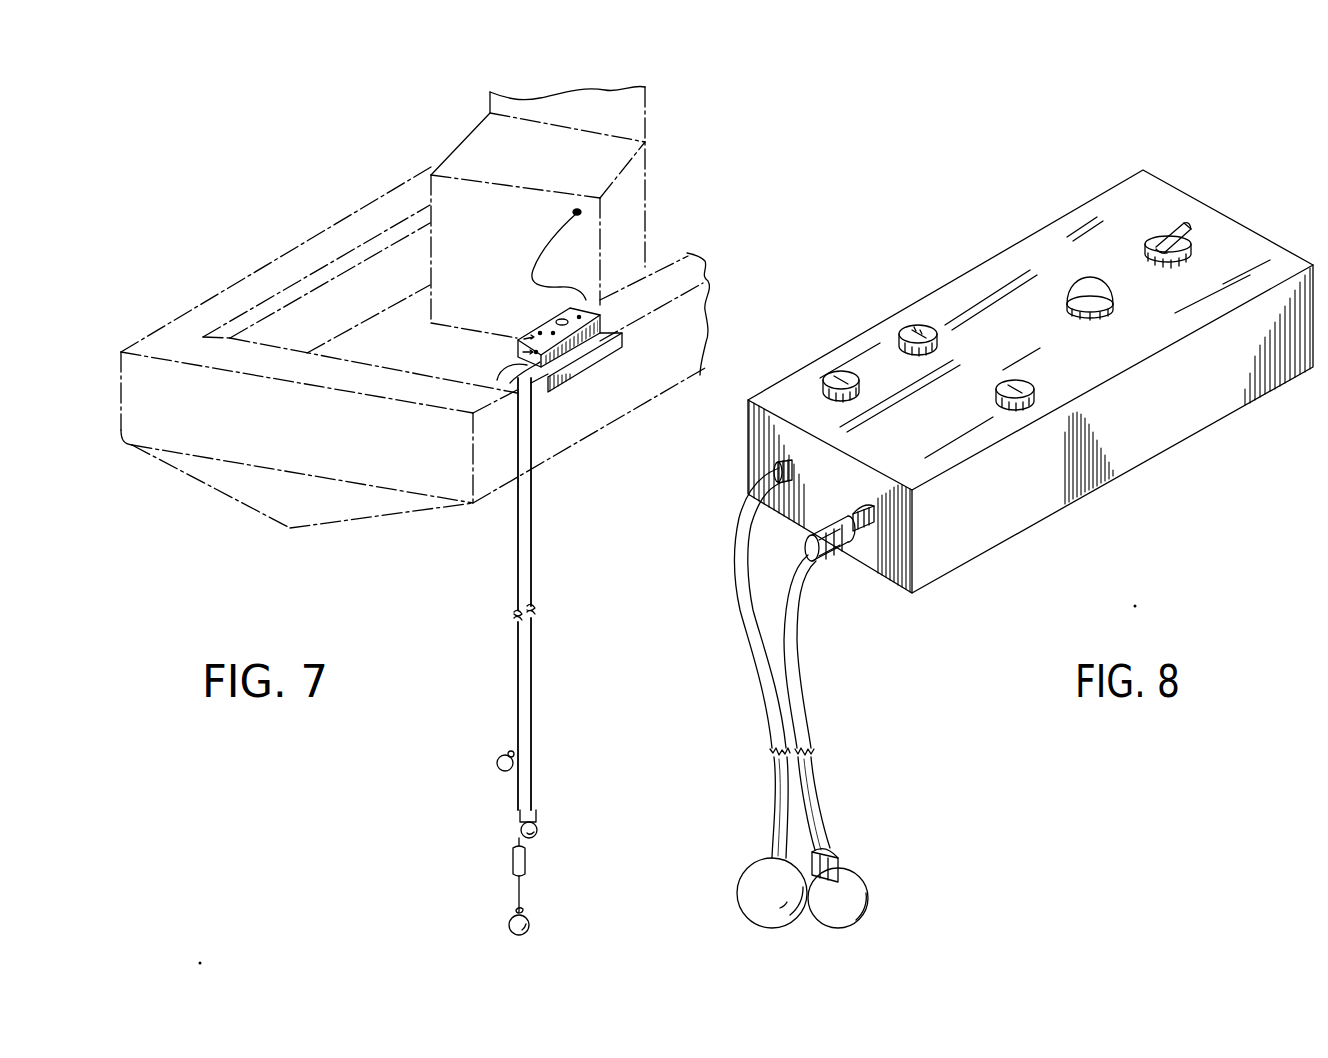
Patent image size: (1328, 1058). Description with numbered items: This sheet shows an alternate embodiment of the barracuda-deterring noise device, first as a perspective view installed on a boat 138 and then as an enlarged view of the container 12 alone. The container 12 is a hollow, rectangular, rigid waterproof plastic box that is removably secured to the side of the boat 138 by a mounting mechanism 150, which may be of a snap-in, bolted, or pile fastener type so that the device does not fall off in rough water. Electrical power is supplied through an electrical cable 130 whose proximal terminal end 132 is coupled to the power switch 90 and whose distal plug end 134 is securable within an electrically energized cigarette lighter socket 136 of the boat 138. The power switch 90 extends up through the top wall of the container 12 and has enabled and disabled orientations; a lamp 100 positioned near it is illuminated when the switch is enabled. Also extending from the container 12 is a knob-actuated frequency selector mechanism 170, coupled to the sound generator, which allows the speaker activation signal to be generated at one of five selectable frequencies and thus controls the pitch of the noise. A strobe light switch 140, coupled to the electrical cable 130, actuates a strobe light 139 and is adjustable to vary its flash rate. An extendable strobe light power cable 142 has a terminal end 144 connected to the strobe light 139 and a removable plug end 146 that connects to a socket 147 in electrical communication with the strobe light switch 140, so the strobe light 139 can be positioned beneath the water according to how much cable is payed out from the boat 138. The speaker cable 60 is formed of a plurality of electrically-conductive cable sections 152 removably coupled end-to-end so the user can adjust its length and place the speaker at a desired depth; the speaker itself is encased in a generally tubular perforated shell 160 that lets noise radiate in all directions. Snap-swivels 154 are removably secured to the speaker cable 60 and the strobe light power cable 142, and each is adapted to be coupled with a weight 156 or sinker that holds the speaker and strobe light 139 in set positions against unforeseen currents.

In FIG. 7, the container 12 is at (547, 332).
In FIG. 8, the speaker cable 60 is at (735, 590).
In FIG. 8, the power switch 90 is at (1158, 244).
In FIG. 8, the lamp 100 is at (1078, 292).
In FIG. 7, the electrical cable 130 is at (555, 305).
In FIG. 7, the proximal terminal end 132 is at (588, 306).
In FIG. 7, the distal plug end 134 is at (573, 212).
In FIG. 7, the cigarette lighter socket 136 is at (586, 209).
In FIG. 7, the boat 138 is at (405, 200).
In FIG. 7, the strobe light 139 is at (537, 829).
In FIG. 8, the strobe light switch 140 is at (1018, 386).
In FIG. 7, the strobe light power cable 142 is at (532, 547).
In FIG. 8, the strobe light power cable 142 is at (920, 333).
In FIG. 8, the terminal end 144 is at (840, 860).
In FIG. 8, the removable plug end 146 is at (862, 562).
In FIG. 8, the socket 147 is at (864, 536).
In FIG. 7, the mounting mechanism 150 is at (590, 357).
In FIG. 7, the cable sections 152 is at (517, 599).
In FIG. 7, the snap-swivels 154 is at (520, 757).
In FIG. 7, the weight 156 is at (499, 764).
In FIG. 7, the perforated shell 160 is at (513, 866).
In FIG. 8, the frequency selector mechanism 170 is at (850, 372).